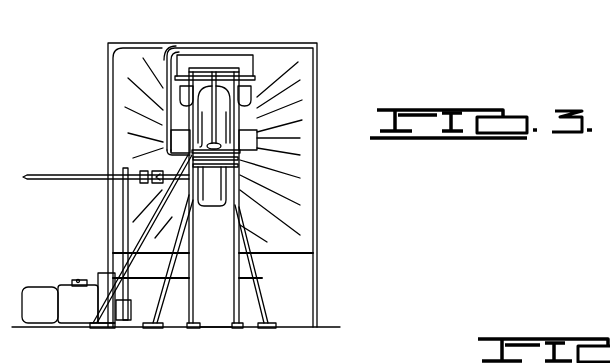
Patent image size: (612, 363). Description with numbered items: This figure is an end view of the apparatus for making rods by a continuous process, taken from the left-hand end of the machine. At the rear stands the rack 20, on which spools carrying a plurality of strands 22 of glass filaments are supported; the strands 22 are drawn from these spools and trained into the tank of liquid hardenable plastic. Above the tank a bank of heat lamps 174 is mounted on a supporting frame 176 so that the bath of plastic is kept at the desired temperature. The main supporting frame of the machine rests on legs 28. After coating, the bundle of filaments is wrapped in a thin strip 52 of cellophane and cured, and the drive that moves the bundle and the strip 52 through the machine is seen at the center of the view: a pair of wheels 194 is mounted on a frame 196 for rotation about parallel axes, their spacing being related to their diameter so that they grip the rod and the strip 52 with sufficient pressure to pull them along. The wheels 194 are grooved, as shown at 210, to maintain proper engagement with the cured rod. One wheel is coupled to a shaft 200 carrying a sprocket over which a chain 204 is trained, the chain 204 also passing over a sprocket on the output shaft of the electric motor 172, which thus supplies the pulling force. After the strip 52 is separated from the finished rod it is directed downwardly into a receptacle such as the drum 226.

The rack 20 is at (318, 77).
The strands 22 is at (141, 93).
The legs 28 is at (262, 299).
The strip 52 is at (185, 233).
The electric motor 172 is at (62, 287).
The heat lamps 174 is at (257, 84).
The supporting frame 176 is at (167, 57).
The wheels 194 is at (203, 87).
The frame 196 is at (193, 276).
The shaft 200 is at (85, 183).
The chain 204 is at (123, 226).
The grooves 210 is at (229, 85).
The drum 226 is at (217, 324).